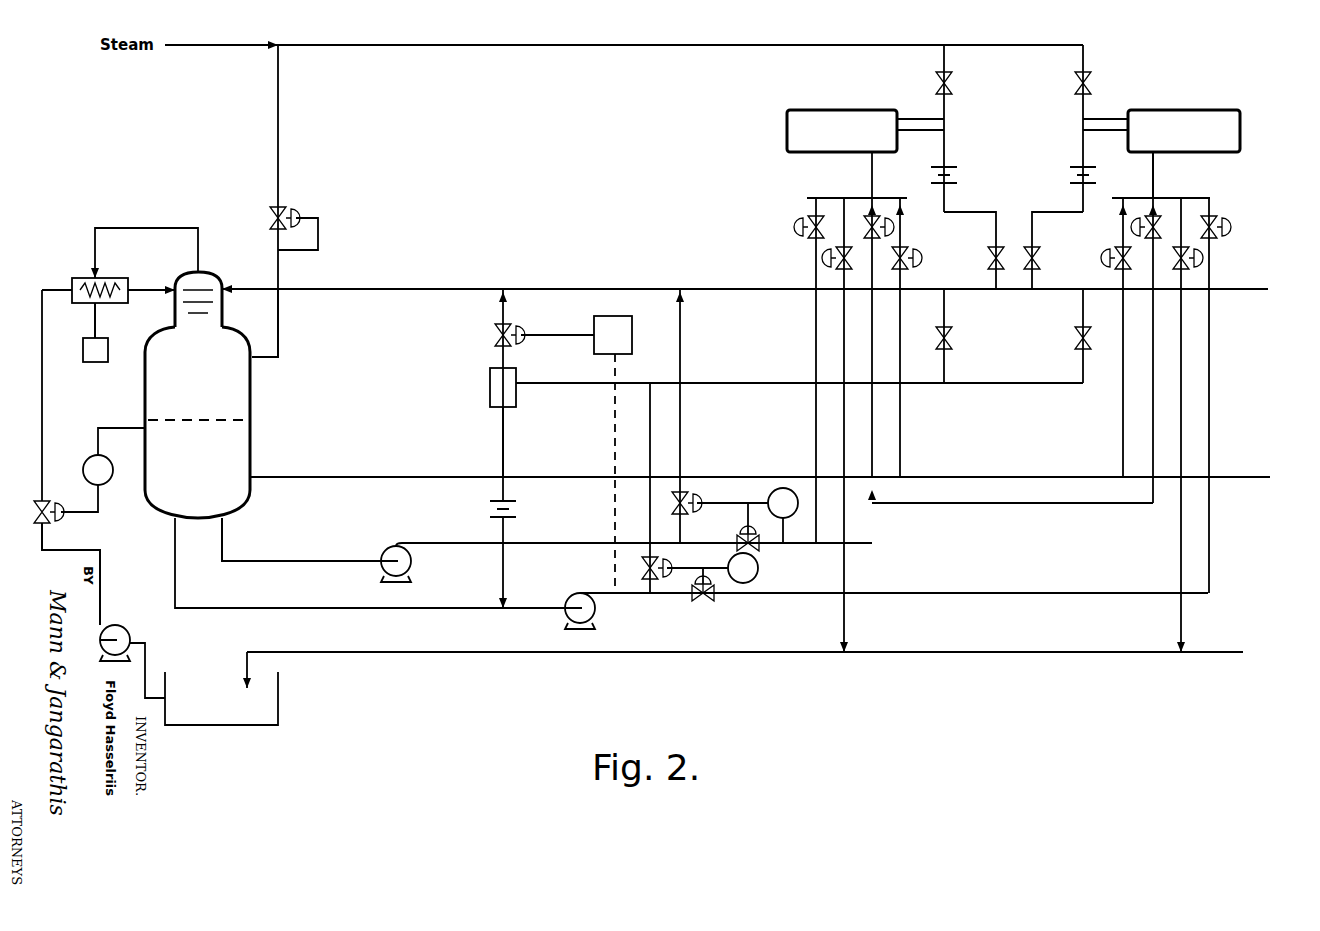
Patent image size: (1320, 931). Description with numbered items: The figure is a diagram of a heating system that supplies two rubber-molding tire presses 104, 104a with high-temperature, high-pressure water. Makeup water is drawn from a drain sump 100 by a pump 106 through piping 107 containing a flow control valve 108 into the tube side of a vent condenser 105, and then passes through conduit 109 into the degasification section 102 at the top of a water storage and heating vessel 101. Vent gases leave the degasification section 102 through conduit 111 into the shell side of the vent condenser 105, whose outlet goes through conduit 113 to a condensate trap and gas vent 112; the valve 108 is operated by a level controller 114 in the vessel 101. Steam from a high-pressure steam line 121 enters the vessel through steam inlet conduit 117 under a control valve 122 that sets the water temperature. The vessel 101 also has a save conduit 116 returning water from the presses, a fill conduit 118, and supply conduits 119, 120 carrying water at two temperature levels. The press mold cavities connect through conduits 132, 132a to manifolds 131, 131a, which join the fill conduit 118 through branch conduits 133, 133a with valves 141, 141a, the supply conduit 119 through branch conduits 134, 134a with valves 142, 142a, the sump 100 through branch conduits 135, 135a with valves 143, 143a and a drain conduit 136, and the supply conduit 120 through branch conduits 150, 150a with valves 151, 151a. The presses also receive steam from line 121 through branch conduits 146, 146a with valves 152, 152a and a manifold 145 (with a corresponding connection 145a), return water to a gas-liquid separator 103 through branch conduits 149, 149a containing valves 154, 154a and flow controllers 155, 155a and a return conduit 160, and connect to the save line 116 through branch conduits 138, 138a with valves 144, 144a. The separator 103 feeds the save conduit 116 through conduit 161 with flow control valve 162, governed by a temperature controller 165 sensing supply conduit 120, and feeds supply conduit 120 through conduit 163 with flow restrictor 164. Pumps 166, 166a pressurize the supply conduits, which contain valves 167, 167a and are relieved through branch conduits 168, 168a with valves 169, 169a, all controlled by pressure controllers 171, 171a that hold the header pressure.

The drain sump 100 is at (280, 703).
The vessel 101 is at (212, 464).
The degasification section 102 is at (206, 272).
The gas-liquid separator 103 is at (490, 398).
The tire press 104 is at (862, 110).
The tire press 104a is at (1168, 110).
The vent condenser 105 is at (80, 277).
The pump 106 is at (131, 638).
The piping 107 is at (100, 605).
The flow control valve 108 is at (62, 518).
The conduit 109 is at (147, 300).
The conduit 111 is at (165, 228).
The condensate trap and gas vent 112 is at (97, 363).
The conduit 113 is at (94, 317).
The level controller 114 is at (85, 462).
The save conduit 116 is at (446, 288).
The steam inlet conduit 117 is at (262, 359).
The fill conduit 118 is at (362, 480).
The supply conduit 119 is at (224, 545).
The supply conduit 120 is at (400, 610).
The high-pressure steam line 121 is at (682, 44).
The control valve 122 is at (297, 215).
The manifold 131 is at (812, 197).
The manifold 131a is at (1212, 197).
The conduit 132 is at (872, 180).
The conduit 132a is at (1155, 181).
The branch conduit 133 is at (903, 467).
The branch conduit 133a is at (1122, 464).
The branch conduit 134 is at (876, 491).
The branch conduit 134a is at (1121, 502).
The branch conduit 135 is at (846, 622).
The branch conduit 135a is at (1183, 622).
The drain conduit 136 is at (547, 654).
The branch conduit 138 is at (990, 220).
The branch conduit 138a is at (1033, 218).
The valve 141 is at (917, 262).
The valve 141a is at (1108, 258).
The valve 142 is at (890, 228).
The valve 142a is at (1138, 223).
The valve 143 is at (831, 259).
The valve 143a is at (1199, 259).
The valve 144 is at (989, 258).
The valve 144a is at (1035, 258).
The manifold 145 is at (918, 132).
The press connections 145a is at (1105, 132).
The branch conduit 146 is at (947, 121).
The branch conduit 146a is at (1083, 119).
The branch conduit 149 is at (947, 368).
The branch conduit 149a is at (1082, 198).
The branch conduit 150 is at (815, 352).
The branch conduit 150a is at (1212, 466).
The valve 151 is at (803, 228).
The valve 151a is at (1228, 228).
The valve 152 is at (951, 85).
The valve 152a is at (1080, 86).
The valve 154 is at (950, 344).
The valve 154a is at (1077, 343).
The flow controller 155 is at (955, 176).
The flow controller 155a is at (1080, 176).
The return conduit 160 is at (713, 385).
The conduit 161 is at (500, 313).
The flow control valve 162 is at (523, 331).
The conduit 163 is at (506, 444).
The flow restrictor 164 is at (520, 516).
The temperature controller 165 is at (593, 350).
The pump 166 is at (415, 558).
The pump 166a is at (596, 610).
The valve 167 is at (748, 525).
The valve 167a is at (706, 602).
The branch conduit 168 is at (680, 530).
The branch conduit 168a is at (652, 583).
The valve 169 is at (700, 502).
The valve 169a is at (670, 570).
The pressure controller 171 is at (783, 488).
The pressure controller 171a is at (759, 565).